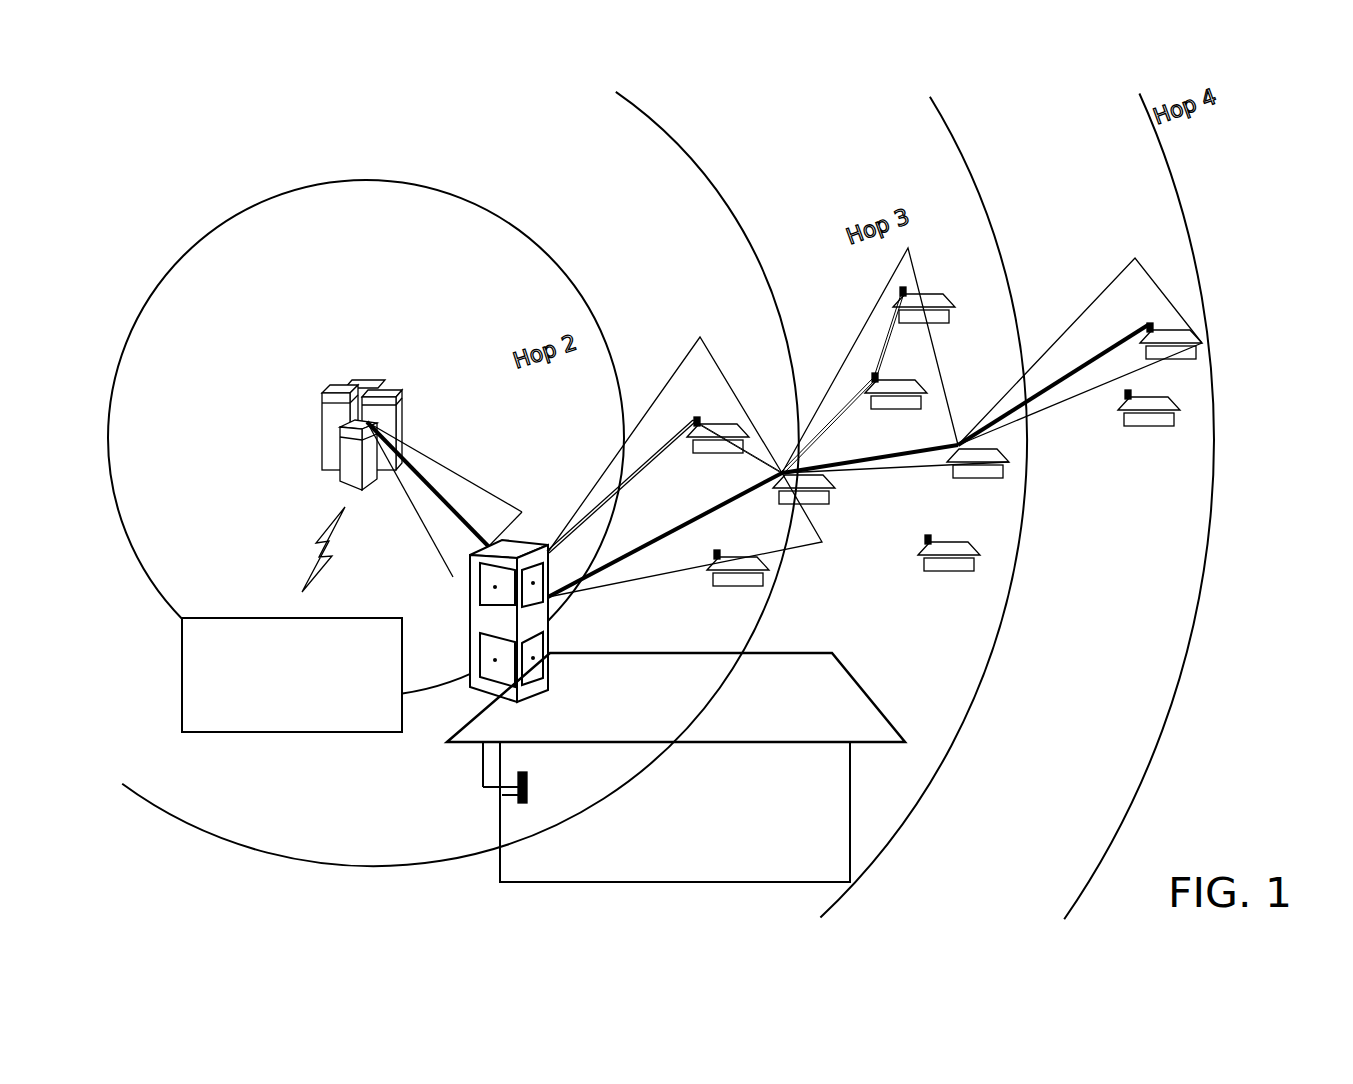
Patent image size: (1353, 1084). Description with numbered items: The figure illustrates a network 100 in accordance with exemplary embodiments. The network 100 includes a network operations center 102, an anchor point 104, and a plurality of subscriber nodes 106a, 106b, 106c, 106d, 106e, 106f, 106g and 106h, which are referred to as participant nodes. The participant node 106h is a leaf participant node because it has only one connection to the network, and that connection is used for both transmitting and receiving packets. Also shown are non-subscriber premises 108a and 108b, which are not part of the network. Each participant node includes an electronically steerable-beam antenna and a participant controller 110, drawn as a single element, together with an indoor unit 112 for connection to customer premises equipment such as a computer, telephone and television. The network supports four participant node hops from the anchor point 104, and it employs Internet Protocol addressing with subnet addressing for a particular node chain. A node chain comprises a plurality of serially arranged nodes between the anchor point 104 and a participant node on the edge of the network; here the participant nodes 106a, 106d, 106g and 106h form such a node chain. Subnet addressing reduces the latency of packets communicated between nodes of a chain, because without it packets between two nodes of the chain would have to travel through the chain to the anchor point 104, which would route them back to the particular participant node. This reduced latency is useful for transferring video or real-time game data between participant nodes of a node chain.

The network 100 is at (950, 862).
The network operations center 102 is at (335, 733).
The anchor point 104 is at (322, 458).
The subscriber node 106a is at (865, 693).
The subscriber node 106b is at (732, 430).
The subscriber node 106c is at (722, 588).
The subscriber node 106d is at (823, 507).
The subscriber node 106e is at (937, 300).
The subscriber node 106f is at (888, 408).
The subscriber node 106g is at (988, 478).
The subscriber node 106h is at (1183, 333).
The non-subscriber premises 108a is at (962, 571).
The non-subscriber premises 108b is at (1163, 426).
The participant controller 110 is at (548, 614).
The indoor unit 112 is at (518, 792).